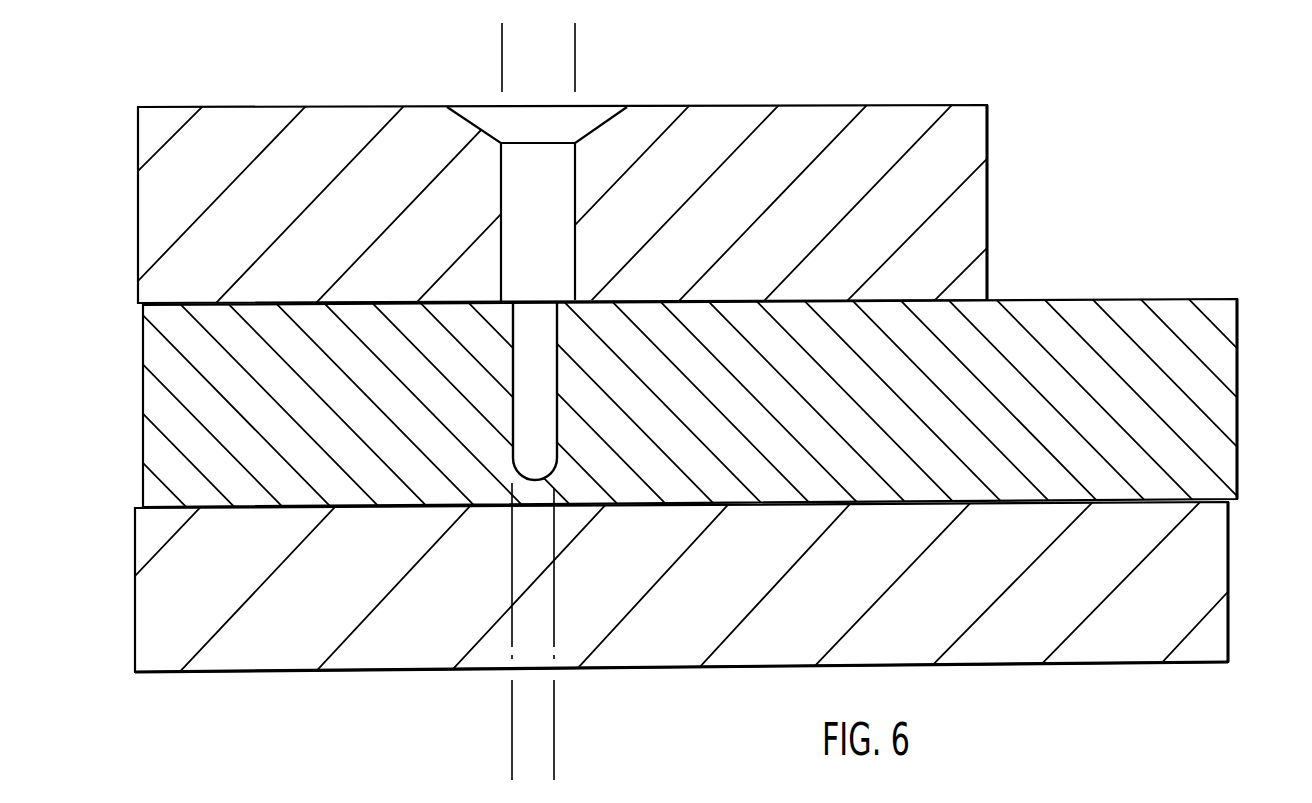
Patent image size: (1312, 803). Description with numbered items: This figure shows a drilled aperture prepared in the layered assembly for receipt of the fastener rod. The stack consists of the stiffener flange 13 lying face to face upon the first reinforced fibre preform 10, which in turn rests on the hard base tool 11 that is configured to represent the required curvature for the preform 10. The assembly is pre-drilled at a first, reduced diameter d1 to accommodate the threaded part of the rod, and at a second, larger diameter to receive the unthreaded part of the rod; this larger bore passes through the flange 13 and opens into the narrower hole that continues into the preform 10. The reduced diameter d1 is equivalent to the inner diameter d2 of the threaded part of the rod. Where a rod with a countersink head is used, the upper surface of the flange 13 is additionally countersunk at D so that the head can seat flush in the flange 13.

The first reinforced fibre preform 10 is at (1210, 400).
The hard base tool 11 is at (1208, 572).
The flange 13 is at (637, 203).
The countersink D is at (483, 122).
The first diameter d1 is at (447, 738).
The inner diameter of the threaded part d2 is at (435, 62).